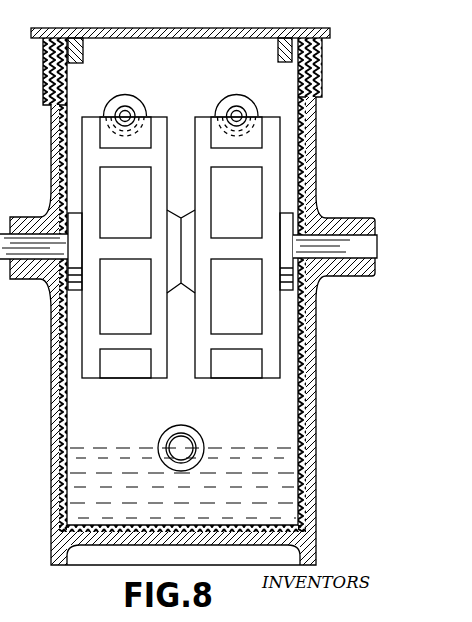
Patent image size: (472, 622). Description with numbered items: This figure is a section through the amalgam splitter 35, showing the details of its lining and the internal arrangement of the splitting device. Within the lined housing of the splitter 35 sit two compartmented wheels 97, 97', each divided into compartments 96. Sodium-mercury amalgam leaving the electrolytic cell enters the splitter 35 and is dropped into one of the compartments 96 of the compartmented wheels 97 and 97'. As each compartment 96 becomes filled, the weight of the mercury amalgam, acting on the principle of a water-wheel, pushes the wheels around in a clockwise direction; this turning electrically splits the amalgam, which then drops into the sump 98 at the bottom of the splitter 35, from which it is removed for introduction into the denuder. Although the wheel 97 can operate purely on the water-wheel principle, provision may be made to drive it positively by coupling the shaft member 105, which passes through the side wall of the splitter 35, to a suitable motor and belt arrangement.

The amalgam splitter 35 is at (313, 72).
The compartment 96 is at (131, 216).
The compartmented wheel 97 is at (148, 104).
The compartmented wheel 97' is at (253, 102).
The sump 98 is at (259, 448).
The shaft member 105 is at (337, 248).